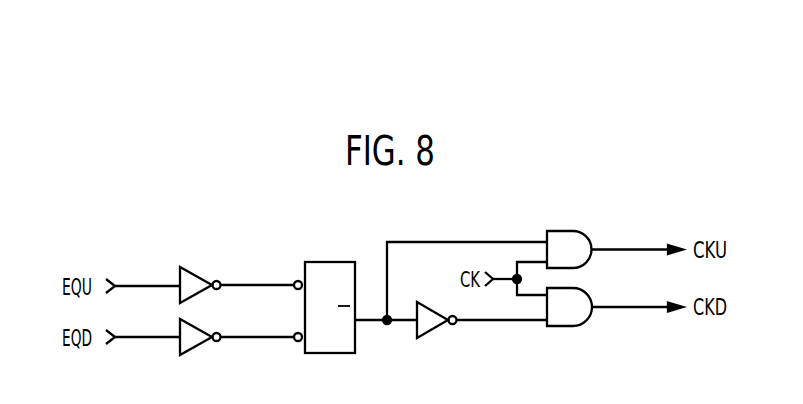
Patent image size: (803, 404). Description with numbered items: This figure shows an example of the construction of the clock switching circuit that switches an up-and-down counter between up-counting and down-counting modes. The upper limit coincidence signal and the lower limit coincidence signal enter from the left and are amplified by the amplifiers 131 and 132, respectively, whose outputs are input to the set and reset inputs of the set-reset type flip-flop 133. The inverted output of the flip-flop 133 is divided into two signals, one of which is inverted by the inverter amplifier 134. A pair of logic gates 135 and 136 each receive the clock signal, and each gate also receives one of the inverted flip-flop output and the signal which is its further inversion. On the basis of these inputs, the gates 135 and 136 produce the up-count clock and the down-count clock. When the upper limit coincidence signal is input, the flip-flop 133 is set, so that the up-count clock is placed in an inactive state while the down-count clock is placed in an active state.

The amplifier 131 is at (203, 270).
The amplifier 132 is at (203, 351).
The set-reset type flip-flop 133 is at (335, 354).
The inverter amplifier 134 is at (440, 334).
The logic gate 135 is at (568, 231).
The logic gate 136 is at (577, 327).